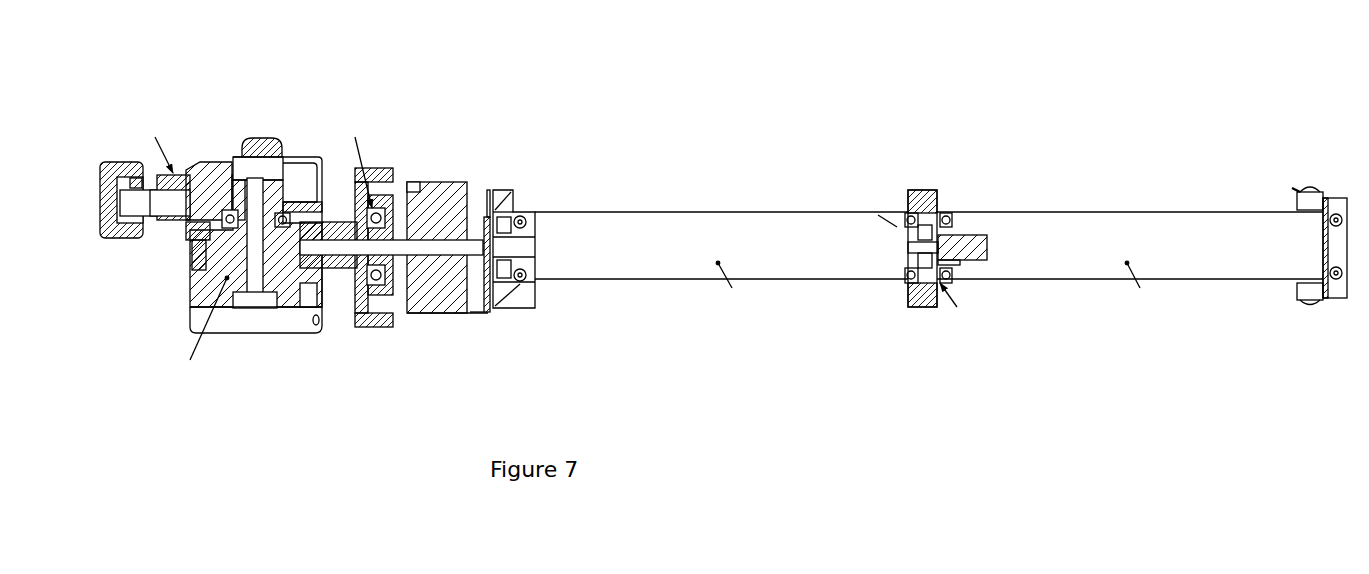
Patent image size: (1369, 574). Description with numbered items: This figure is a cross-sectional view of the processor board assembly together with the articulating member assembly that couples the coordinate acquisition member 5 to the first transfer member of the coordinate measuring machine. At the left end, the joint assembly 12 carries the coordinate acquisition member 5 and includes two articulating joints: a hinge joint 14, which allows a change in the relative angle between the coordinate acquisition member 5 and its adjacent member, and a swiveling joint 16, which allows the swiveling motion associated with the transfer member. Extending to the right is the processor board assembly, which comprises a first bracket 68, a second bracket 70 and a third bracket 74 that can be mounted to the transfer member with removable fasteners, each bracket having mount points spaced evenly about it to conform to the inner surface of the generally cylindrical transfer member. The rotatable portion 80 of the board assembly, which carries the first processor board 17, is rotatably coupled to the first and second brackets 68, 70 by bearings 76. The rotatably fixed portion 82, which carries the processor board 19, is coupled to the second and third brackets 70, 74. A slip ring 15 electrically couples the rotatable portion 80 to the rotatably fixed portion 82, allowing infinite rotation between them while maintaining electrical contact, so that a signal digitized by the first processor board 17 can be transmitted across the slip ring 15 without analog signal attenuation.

The coordinate acquisition member 5 is at (140, 172).
The joint assembly 12 is at (347, 183).
The hinge joint 14 is at (260, 168).
The slip ring 15 is at (902, 230).
The swiveling joint 16 is at (430, 217).
The first processor board 17 is at (642, 230).
The processor board 19 is at (1133, 228).
The first bracket 68 is at (498, 190).
The second bracket 70 is at (929, 190).
The third bracket 74 is at (1315, 198).
The bearings 76 is at (530, 230).
The rotatable portion 80 is at (737, 187).
The rotatably fixed portion 82 is at (1063, 183).